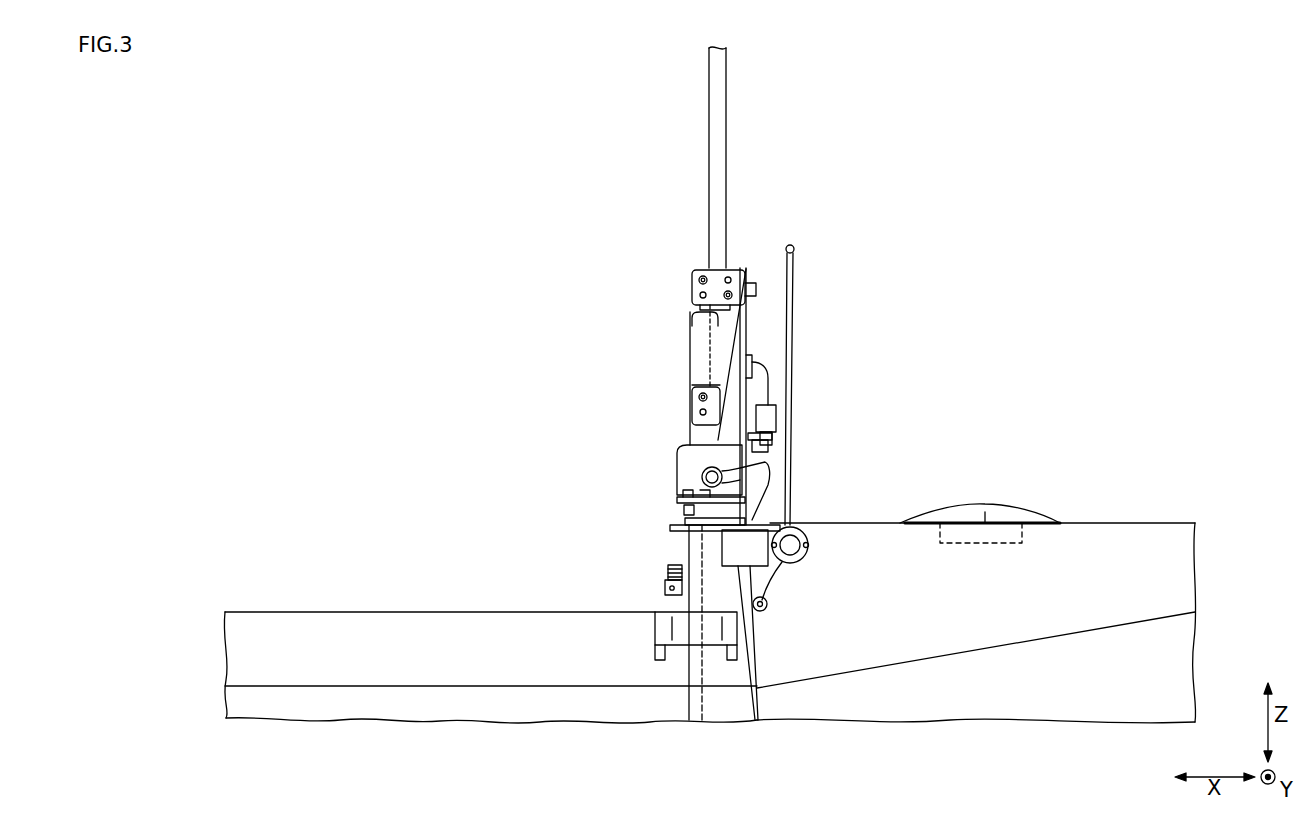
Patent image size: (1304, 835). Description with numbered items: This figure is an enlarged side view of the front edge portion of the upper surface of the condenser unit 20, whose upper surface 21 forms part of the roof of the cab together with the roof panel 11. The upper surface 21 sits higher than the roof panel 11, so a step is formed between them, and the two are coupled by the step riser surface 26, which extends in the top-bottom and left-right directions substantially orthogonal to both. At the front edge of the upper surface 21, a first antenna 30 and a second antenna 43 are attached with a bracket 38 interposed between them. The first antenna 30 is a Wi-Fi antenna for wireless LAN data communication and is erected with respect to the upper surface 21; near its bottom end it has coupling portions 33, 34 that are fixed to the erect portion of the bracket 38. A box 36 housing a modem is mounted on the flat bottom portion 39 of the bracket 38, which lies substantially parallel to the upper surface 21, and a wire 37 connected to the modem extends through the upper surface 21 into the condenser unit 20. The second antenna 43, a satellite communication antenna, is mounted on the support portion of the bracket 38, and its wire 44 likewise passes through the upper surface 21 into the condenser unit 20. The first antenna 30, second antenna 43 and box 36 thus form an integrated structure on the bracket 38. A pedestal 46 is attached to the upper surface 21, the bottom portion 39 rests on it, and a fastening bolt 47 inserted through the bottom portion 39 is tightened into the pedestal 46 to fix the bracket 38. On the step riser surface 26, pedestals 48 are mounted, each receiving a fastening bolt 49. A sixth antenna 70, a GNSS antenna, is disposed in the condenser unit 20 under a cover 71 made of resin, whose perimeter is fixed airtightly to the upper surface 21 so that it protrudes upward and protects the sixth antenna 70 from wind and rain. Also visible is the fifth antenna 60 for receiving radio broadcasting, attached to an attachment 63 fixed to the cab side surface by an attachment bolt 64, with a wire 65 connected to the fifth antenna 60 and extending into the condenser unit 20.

The roof panel 11 is at (319, 611).
The condenser unit 20 is at (1150, 575).
The upper surface 21 is at (1128, 522).
The step riser surface 26 is at (686, 603).
The first antenna 30 is at (708, 134).
The coupling portion 33 is at (692, 294).
The coupling portion 34 is at (700, 403).
The box 36 is at (690, 457).
The wire 37 is at (746, 450).
The bracket 38 is at (680, 357).
The bottom portion 39 is at (680, 500).
The second antenna 43 is at (700, 318).
The wire 44 is at (770, 380).
The pedestal 46 is at (700, 512).
The fastening bolt 47 is at (705, 485).
The pedestal 48 is at (689, 565).
The fastening bolt 49 is at (668, 572).
The fifth antenna 60 is at (792, 318).
The attachment 63 is at (740, 548).
The attachment bolt 64 is at (790, 545).
The wire 65 is at (790, 582).
The sixth antenna 70 is at (958, 523).
The cover 71 is at (997, 514).